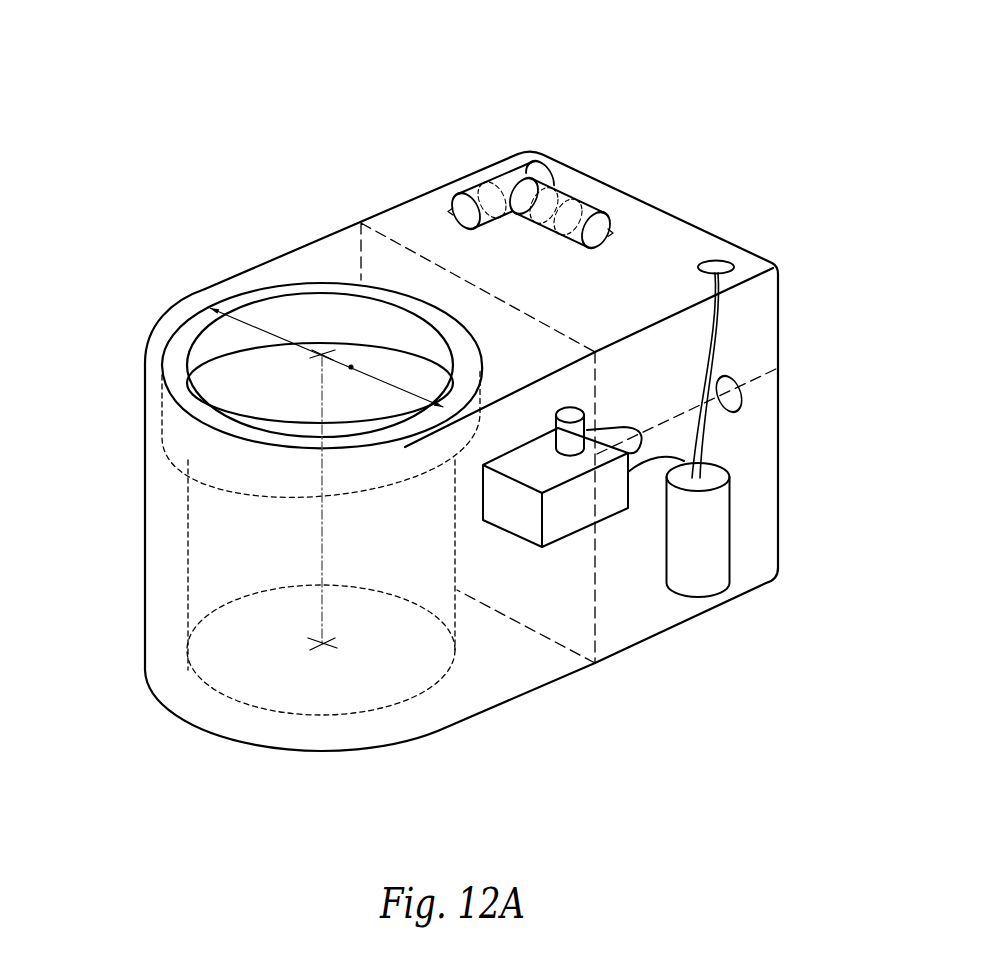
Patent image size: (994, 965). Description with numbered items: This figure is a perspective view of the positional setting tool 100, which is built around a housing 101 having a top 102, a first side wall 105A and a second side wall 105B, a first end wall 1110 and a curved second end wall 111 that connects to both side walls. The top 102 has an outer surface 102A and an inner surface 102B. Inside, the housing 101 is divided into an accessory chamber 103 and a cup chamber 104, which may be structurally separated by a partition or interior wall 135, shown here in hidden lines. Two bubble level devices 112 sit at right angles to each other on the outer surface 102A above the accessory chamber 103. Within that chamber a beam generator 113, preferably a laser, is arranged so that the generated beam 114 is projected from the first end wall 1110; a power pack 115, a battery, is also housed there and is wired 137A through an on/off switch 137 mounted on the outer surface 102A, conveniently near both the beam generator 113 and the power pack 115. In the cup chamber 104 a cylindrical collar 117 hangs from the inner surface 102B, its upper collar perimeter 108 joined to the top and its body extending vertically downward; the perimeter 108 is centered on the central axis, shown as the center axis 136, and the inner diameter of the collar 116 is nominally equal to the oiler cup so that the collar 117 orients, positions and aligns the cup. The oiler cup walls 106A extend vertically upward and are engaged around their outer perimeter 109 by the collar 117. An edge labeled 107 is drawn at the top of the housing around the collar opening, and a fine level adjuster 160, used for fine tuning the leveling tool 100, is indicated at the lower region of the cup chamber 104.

The tool 100 is at (345, 137).
The housing 101 is at (208, 270).
The top 102 is at (685, 239).
The outer surface 102A is at (637, 193).
The inner surface 102B is at (630, 212).
The accessory chamber 103 is at (750, 498).
The cup chamber 104 is at (532, 653).
The first side wall 105A is at (750, 432).
The second side wall 105B is at (496, 158).
The oiler cup walls 106A is at (190, 480).
The rim 107 is at (150, 333).
The collar perimeter 108 is at (148, 360).
The outer perimeter 109 is at (158, 380).
The second end wall 111 is at (145, 533).
The bubble level devices 112 is at (477, 185).
The beam generator 113 is at (570, 515).
The generated beam 114 is at (683, 413).
The power pack 115 is at (705, 542).
The inner diameter of the collar 116 is at (351, 367).
The cylindrical collar 117 is at (167, 436).
The partition 135 is at (578, 587).
The center axis 136 is at (320, 527).
The on/off switch 137 is at (722, 258).
The wiring 137A is at (717, 350).
The fine level adjuster 160 is at (237, 667).
The first end wall 1110 is at (782, 330).